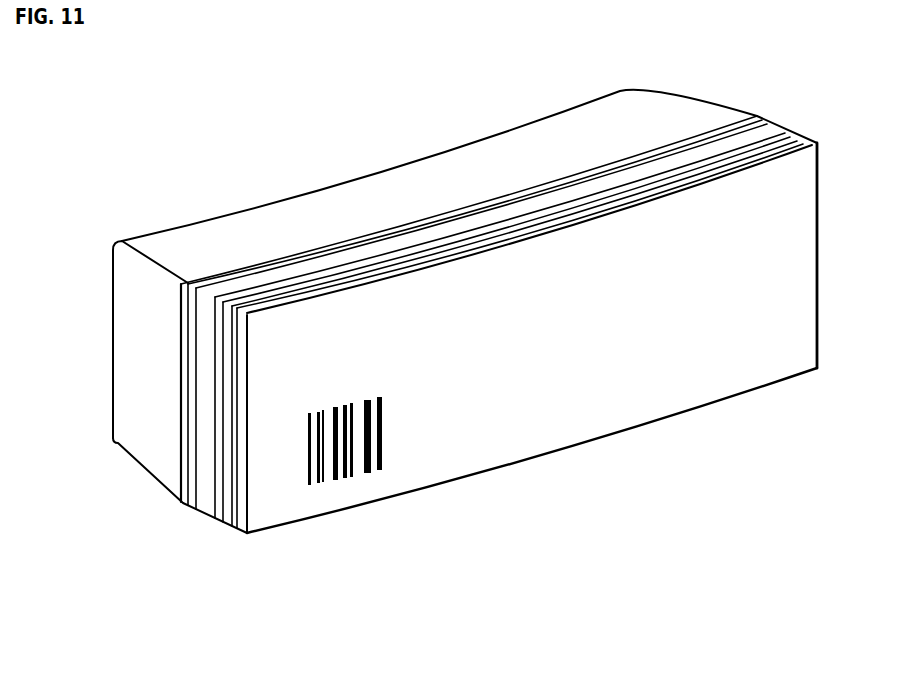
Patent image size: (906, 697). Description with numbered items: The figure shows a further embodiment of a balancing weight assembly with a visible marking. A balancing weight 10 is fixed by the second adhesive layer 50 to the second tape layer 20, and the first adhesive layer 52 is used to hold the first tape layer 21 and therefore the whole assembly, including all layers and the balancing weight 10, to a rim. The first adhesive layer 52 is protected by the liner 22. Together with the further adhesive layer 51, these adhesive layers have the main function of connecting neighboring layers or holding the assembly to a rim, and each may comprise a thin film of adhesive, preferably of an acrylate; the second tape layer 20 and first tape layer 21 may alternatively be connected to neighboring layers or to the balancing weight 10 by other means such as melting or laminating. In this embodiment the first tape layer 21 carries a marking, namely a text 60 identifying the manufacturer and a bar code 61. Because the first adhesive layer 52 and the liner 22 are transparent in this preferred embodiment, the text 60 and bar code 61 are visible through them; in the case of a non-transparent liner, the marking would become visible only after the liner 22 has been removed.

The balancing weight 10 is at (472, 168).
The second tape layer 20 is at (203, 433).
The first tape layer 21 is at (227, 487).
The liner 22 is at (243, 525).
The second adhesive layer 50 is at (190, 412).
The adhesive layer 51 is at (218, 458).
The first adhesive layer 52 is at (235, 512).
The text 60 is at (377, 322).
The bar code 61 is at (308, 459).